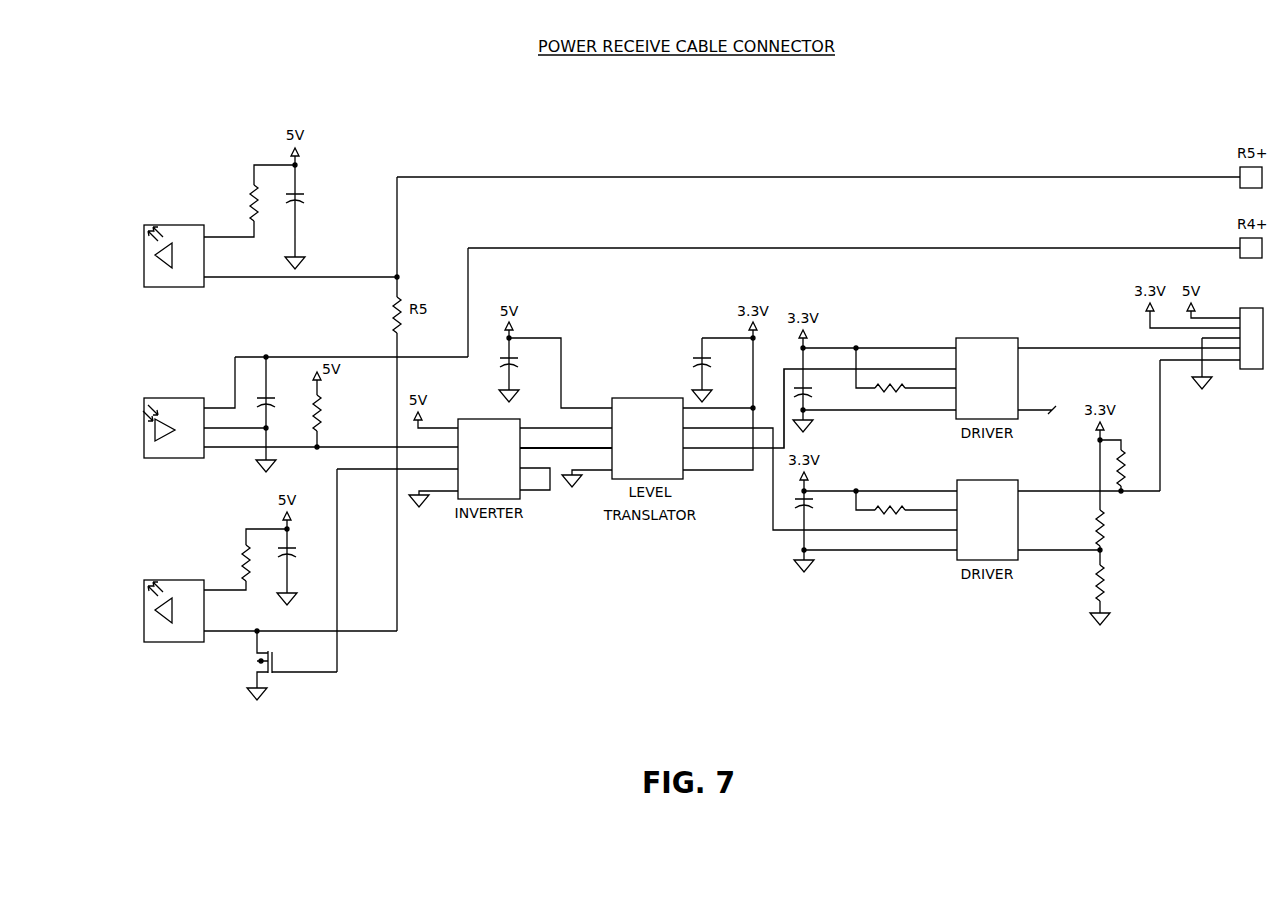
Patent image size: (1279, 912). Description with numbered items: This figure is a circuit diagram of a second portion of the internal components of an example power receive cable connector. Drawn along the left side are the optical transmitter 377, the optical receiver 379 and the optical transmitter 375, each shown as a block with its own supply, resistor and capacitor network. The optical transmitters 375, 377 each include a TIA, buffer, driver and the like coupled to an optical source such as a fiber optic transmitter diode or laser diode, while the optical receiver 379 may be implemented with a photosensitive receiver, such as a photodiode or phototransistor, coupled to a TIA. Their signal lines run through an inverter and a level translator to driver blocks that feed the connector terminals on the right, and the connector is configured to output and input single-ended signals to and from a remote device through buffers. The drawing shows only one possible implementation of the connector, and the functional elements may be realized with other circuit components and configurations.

The optical transmitter 377 is at (155, 226).
The optical receiver 379 is at (155, 398).
The optical transmitter 375 is at (157, 581).